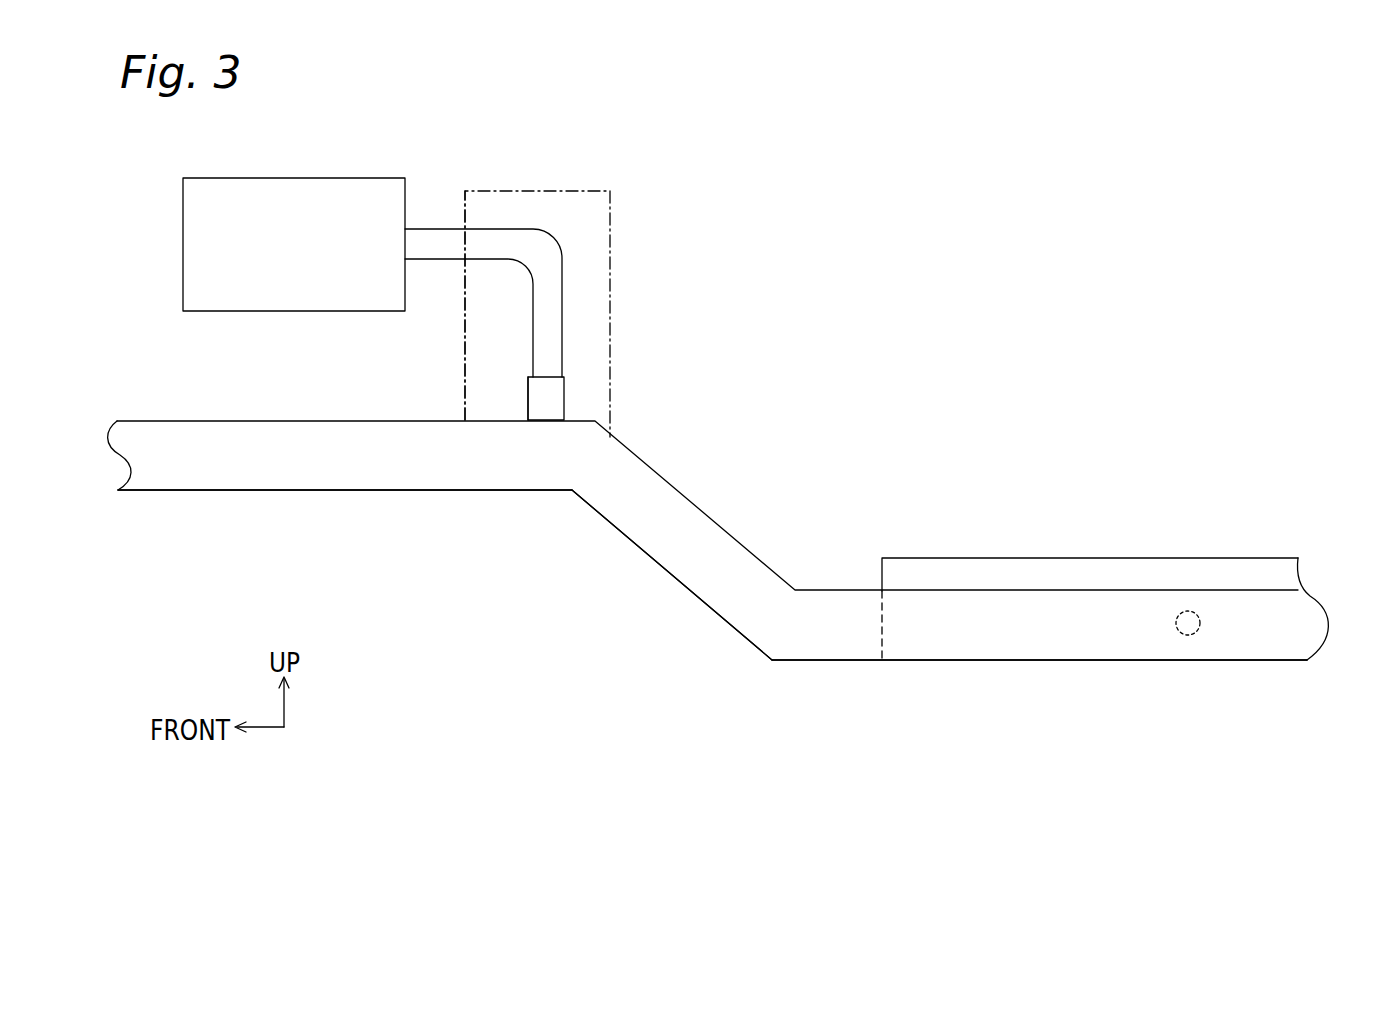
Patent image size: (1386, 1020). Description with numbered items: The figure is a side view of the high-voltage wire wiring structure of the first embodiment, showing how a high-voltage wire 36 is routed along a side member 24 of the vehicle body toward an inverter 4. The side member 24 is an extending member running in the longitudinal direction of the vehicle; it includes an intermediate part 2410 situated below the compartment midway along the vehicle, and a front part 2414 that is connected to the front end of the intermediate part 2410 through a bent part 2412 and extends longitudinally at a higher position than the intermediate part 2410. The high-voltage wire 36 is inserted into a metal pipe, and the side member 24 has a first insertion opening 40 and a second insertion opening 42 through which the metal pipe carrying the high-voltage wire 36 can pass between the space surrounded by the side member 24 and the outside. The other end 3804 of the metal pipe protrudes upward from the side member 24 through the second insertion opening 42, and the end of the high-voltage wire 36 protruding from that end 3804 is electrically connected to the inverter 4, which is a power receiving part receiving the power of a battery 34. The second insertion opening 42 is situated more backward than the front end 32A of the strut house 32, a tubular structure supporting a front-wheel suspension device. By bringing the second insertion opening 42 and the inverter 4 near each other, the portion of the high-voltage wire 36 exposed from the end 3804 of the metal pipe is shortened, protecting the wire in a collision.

The inverter 4 is at (258, 178).
The strut house 32 is at (552, 191).
The front end of the strut house 32A is at (465, 293).
The high-voltage wire 36 is at (562, 278).
The second insertion opening 42 is at (540, 418).
The other end of the metal pipe 3804 is at (528, 397).
The side member 24 is at (820, 660).
The front part 2414 is at (317, 490).
The bent part 2412 is at (658, 569).
The intermediate part 2410 is at (1035, 660).
The battery 34 is at (1157, 572).
The first insertion opening 40 is at (1185, 628).